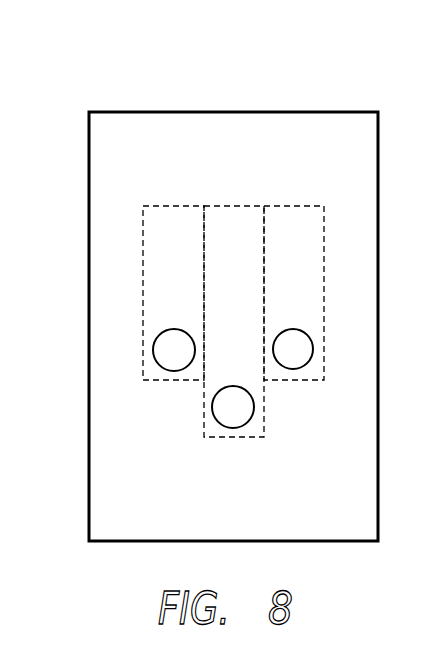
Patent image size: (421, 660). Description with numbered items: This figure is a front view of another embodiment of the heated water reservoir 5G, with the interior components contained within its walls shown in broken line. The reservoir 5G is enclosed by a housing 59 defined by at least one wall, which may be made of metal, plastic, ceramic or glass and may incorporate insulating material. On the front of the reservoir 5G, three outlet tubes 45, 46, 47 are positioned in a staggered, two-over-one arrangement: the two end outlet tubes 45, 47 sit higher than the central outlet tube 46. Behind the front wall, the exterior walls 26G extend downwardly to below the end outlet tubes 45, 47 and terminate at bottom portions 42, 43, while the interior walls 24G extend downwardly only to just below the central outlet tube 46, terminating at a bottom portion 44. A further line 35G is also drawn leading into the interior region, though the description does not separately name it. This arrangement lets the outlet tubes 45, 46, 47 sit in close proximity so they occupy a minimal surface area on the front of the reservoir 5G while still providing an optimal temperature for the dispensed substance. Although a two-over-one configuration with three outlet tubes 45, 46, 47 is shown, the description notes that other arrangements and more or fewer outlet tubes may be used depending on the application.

The housing 59 is at (85, 512).
The reservoir 5G is at (62, 427).
The bottom portion 42 is at (160, 381).
The bottom portion 44 is at (233, 438).
The bottom portion 43 is at (280, 381).
The outlet tube 45 is at (165, 346).
The central outlet tube 46 is at (244, 415).
The outlet tube 47 is at (303, 355).
The gate line 35G is at (180, 206).
The interior walls 24G is at (204, 232).
The exterior walls 26G is at (324, 211).